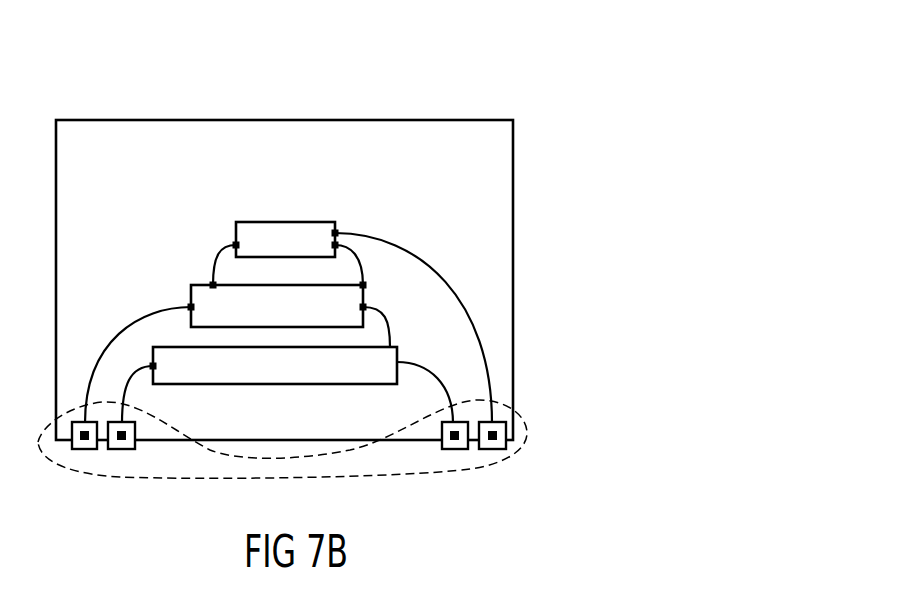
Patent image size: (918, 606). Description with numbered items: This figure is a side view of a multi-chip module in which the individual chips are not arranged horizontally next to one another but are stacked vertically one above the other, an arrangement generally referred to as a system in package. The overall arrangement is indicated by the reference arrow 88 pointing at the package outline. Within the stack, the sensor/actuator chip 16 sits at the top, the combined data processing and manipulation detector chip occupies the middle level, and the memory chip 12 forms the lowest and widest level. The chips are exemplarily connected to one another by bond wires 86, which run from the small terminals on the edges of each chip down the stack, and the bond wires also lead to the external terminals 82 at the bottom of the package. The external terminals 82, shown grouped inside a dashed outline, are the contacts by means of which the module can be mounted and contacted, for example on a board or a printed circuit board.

The electronic assembly 88 is at (514, 62).
The sensor/actuator chip 16 is at (268, 230).
The memory chip 12 is at (295, 373).
The bond wires 86 is at (426, 266).
The external terminals 82 is at (517, 453).